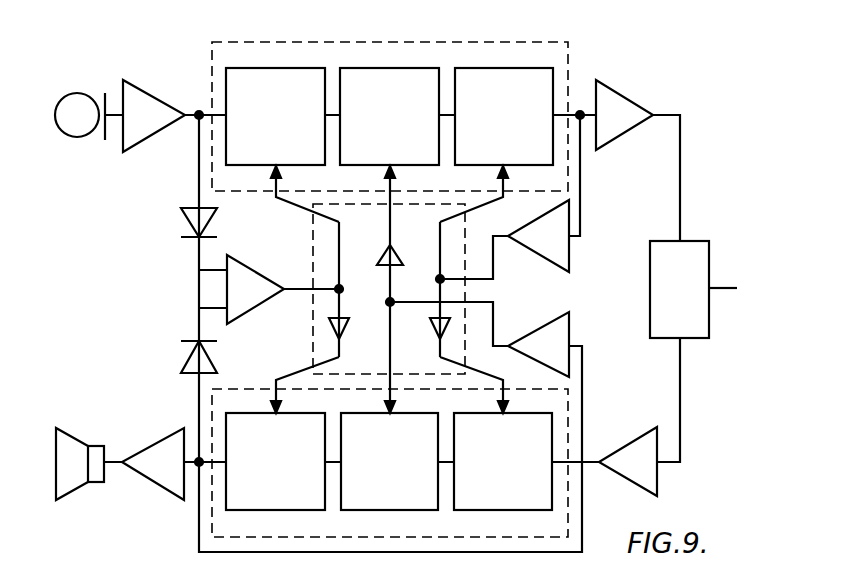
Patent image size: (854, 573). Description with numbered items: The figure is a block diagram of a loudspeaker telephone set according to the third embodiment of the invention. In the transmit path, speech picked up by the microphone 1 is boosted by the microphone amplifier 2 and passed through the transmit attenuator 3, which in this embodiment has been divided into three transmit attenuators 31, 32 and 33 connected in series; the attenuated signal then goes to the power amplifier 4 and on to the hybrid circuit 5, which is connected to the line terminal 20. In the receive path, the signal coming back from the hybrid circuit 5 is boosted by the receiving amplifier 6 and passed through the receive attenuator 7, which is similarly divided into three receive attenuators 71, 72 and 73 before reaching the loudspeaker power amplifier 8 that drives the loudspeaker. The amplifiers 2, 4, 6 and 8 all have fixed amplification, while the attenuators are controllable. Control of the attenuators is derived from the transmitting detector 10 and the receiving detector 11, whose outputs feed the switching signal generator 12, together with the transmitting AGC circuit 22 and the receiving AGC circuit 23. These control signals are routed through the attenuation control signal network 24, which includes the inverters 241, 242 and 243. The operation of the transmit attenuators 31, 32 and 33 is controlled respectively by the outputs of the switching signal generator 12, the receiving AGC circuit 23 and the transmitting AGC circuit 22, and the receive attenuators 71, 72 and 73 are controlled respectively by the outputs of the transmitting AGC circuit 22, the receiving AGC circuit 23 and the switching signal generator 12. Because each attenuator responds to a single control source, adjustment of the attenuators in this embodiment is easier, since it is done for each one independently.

The microphone 1 is at (78, 93).
The microphone amplifier 2 is at (148, 93).
The transmit attenuator 3 is at (212, 42).
The transmit attenuator 31 is at (297, 68).
The transmit attenuator 32 is at (418, 68).
The transmit attenuator 33 is at (530, 68).
The power amplifier 4 is at (623, 97).
The hybrid circuit 5 is at (660, 241).
The line terminal 20 is at (718, 288).
The transmitting AGC circuit 22 is at (569, 258).
The receiving AGC circuit 23 is at (569, 323).
The receiving amplifier 6 is at (622, 445).
The transmitting detector 10 is at (181, 221).
The receiving detector 11 is at (181, 359).
The switching signal generator 12 is at (245, 262).
The attenuation control signal network 24 is at (313, 282).
The inverter 241 is at (329, 337).
The inverter 242 is at (383, 252).
The inverter 243 is at (438, 331).
The receive attenuator 7 is at (568, 528).
The receive attenuator 71 is at (500, 510).
The receive attenuator 72 is at (388, 510).
The receive attenuator 73 is at (270, 510).
The loudspeaker power amplifier 8 is at (165, 487).